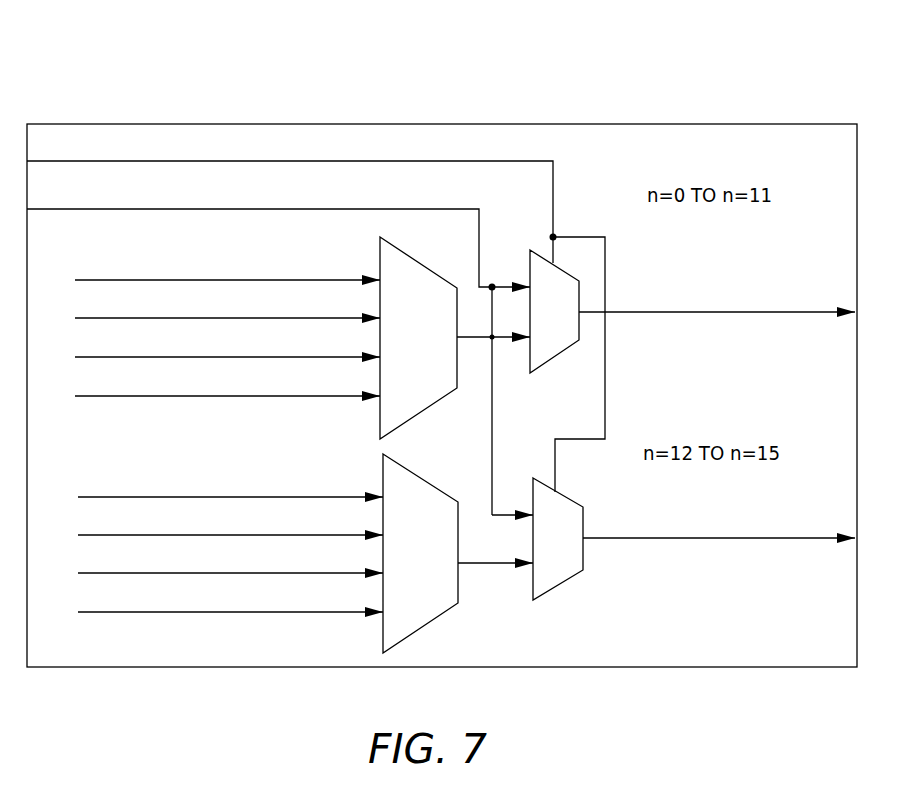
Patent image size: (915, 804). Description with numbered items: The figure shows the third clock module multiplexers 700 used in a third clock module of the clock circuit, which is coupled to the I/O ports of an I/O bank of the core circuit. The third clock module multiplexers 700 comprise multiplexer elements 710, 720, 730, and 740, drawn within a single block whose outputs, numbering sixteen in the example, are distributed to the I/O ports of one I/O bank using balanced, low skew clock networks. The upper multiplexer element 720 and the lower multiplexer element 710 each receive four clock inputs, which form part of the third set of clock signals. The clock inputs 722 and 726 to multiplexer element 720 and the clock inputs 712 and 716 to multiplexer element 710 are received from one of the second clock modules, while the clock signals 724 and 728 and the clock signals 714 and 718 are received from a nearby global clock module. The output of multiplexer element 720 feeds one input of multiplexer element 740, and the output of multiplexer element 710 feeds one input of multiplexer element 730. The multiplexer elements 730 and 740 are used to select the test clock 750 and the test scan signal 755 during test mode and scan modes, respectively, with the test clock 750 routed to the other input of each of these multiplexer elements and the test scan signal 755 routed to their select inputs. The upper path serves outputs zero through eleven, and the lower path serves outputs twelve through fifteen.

The third clock module multiplexers 700 is at (835, 51).
The test scan signal 755 is at (298, 161).
The test clock 750 is at (298, 209).
The multiplexer element 720 is at (412, 258).
The multiplexer element 710 is at (420, 478).
The multiplexer element 740 is at (556, 356).
The multiplexer element 730 is at (558, 585).
The clock input 722 is at (96, 280).
The clock signal 724 is at (96, 318).
The clock input 726 is at (96, 357).
The clock signal 728 is at (96, 396).
The clock input 712 is at (98, 497).
The clock signal 714 is at (98, 535).
The clock input 716 is at (98, 573).
The clock signal 718 is at (98, 612).